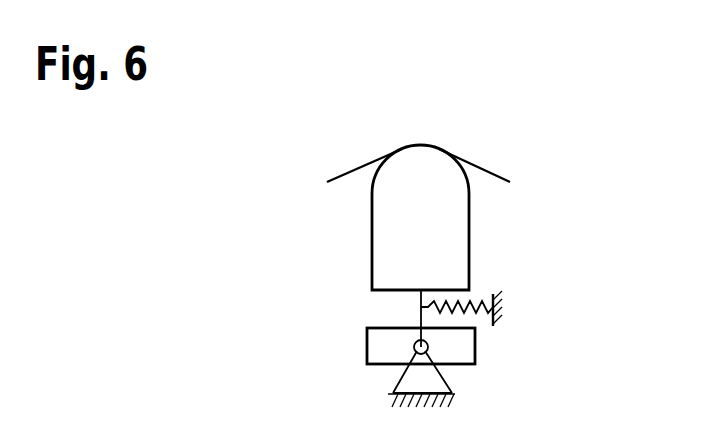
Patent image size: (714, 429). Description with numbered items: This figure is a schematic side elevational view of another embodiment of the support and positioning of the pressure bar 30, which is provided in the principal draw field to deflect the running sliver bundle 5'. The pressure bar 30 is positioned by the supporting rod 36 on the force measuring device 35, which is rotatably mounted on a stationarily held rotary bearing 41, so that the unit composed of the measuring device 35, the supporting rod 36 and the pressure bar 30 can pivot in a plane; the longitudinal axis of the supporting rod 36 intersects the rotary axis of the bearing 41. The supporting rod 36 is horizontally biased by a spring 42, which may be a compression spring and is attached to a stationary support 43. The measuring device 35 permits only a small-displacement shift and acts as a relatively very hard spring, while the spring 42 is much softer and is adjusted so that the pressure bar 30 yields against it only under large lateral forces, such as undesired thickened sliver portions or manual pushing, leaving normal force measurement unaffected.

The running sliver bundle 5' is at (396, 146).
The pressure bar 30 is at (407, 238).
The supporting rod 36 is at (420, 303).
The spring 42 is at (468, 303).
The stationary support 43 is at (502, 318).
The force measuring device 35 is at (382, 348).
The rotary bearing 41 is at (427, 380).